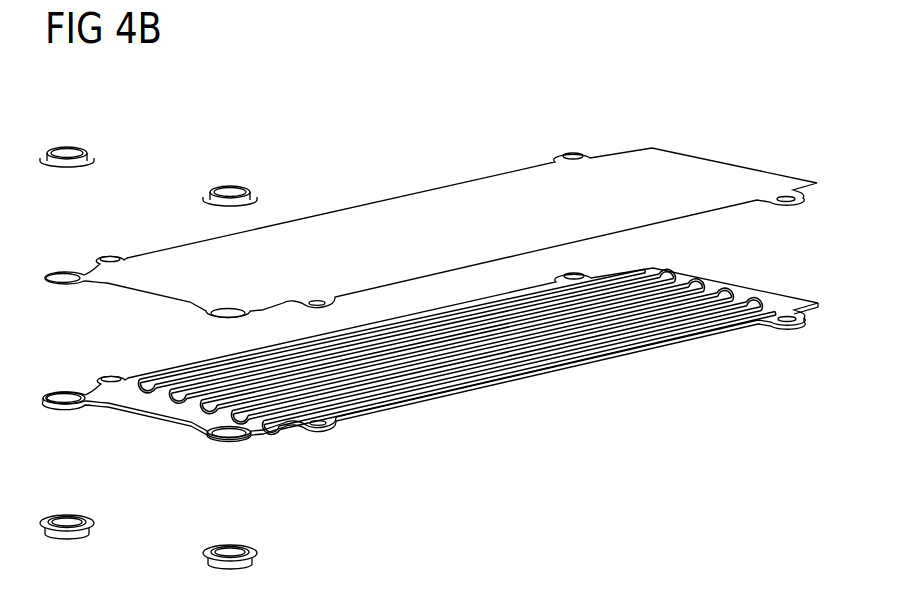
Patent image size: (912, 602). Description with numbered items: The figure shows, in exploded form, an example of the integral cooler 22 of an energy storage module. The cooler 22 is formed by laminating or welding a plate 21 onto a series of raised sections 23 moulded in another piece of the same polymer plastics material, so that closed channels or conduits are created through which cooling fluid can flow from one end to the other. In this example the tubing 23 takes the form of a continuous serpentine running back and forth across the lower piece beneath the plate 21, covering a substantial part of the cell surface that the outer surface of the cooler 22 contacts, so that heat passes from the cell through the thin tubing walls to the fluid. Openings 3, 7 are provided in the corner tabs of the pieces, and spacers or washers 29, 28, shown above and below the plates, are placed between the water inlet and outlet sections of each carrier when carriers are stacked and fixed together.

The opening 3 is at (65, 396).
The opening 7 is at (237, 440).
The plate 21 is at (423, 210).
The cooler 22 is at (430, 356).
The raised sections 23 is at (465, 318).
The washer 28 is at (232, 190).
The washer 29 is at (68, 152).